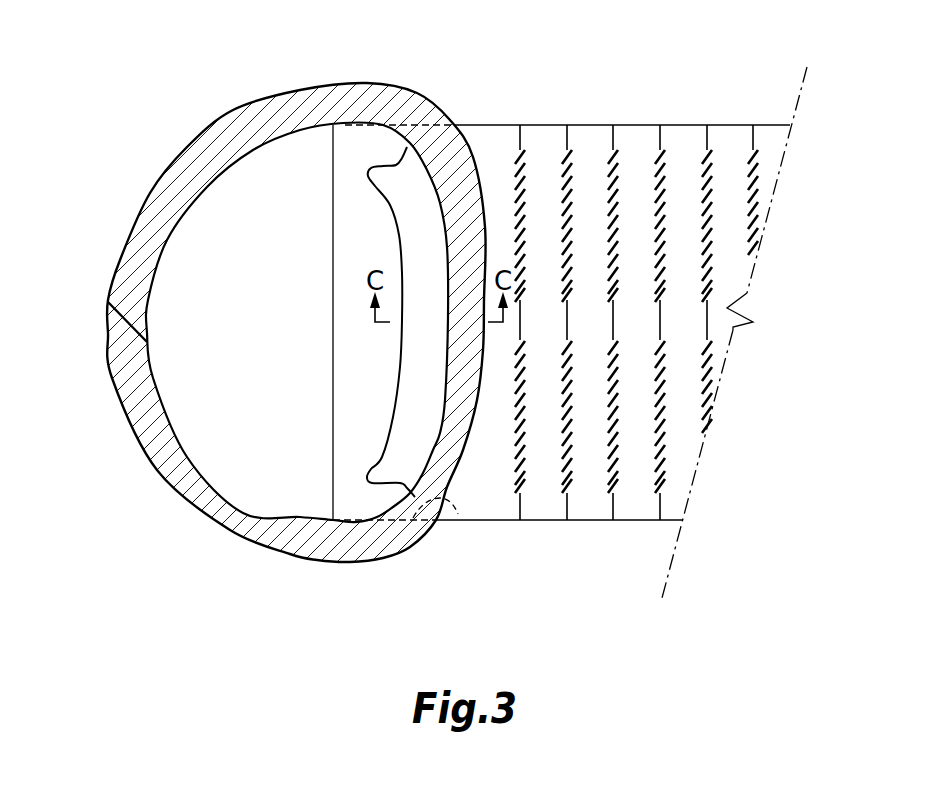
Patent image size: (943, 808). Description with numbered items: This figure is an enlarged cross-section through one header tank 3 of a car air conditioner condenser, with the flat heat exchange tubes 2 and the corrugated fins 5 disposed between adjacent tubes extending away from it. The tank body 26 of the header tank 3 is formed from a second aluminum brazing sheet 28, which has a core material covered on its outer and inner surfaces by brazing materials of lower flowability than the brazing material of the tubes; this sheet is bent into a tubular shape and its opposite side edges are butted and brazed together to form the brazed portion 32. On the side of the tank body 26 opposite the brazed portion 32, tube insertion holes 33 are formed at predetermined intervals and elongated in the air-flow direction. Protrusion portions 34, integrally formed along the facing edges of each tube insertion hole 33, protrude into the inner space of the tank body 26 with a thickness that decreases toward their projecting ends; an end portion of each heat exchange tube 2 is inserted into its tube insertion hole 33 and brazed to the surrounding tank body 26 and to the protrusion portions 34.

The heat exchange tube 2 is at (587, 520).
The header tank 3 is at (205, 103).
The corrugated fin 5 is at (613, 150).
The tank body 26 is at (237, 523).
The second aluminum brazing sheet 28 is at (173, 470).
The brazed portion 32 is at (107, 348).
The tube insertion hole 33 is at (453, 503).
The protrusion portion 34 is at (397, 222).